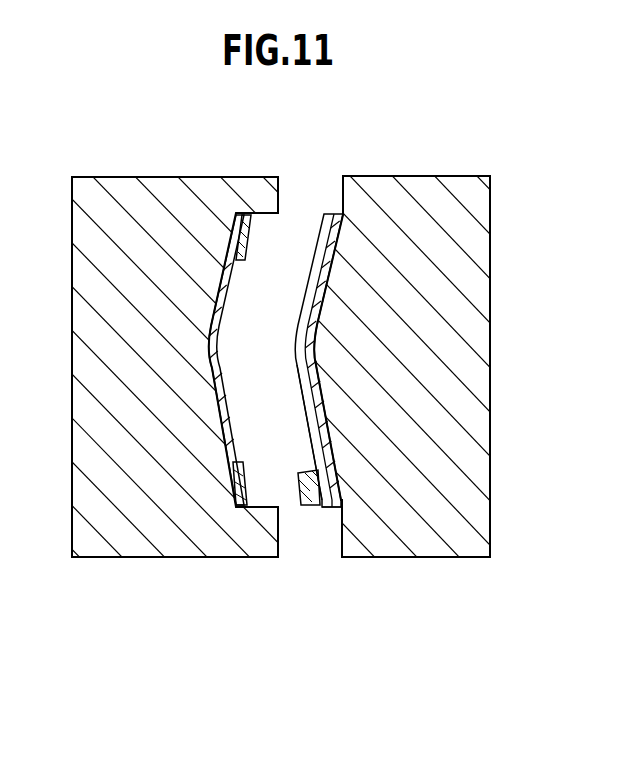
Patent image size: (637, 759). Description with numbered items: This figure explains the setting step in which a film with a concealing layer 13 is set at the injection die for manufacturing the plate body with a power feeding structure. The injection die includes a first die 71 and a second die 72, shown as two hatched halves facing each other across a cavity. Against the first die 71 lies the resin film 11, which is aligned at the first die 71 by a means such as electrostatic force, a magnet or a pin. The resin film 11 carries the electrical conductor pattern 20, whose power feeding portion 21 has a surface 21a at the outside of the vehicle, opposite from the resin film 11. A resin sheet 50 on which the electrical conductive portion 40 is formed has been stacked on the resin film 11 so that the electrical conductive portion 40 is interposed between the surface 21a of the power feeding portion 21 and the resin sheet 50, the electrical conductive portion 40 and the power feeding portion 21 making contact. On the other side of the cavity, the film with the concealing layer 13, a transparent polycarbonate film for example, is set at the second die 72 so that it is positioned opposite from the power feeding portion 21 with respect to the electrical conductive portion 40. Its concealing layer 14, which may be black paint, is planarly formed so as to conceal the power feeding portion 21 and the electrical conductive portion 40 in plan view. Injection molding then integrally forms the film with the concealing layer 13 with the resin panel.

The resin film 11 is at (345, 498).
The film with a concealing layer 13 is at (234, 498).
The concealing layer 14 is at (250, 213).
The electrical conductor pattern 20 is at (330, 508).
The power feeding portion 21 is at (332, 424).
The surface of the power feeding portion 21a is at (312, 452).
The electrical conductive portion 40 is at (318, 508).
The resin sheet 50 is at (303, 508).
The first die 71 is at (435, 545).
The second die 72 is at (126, 542).